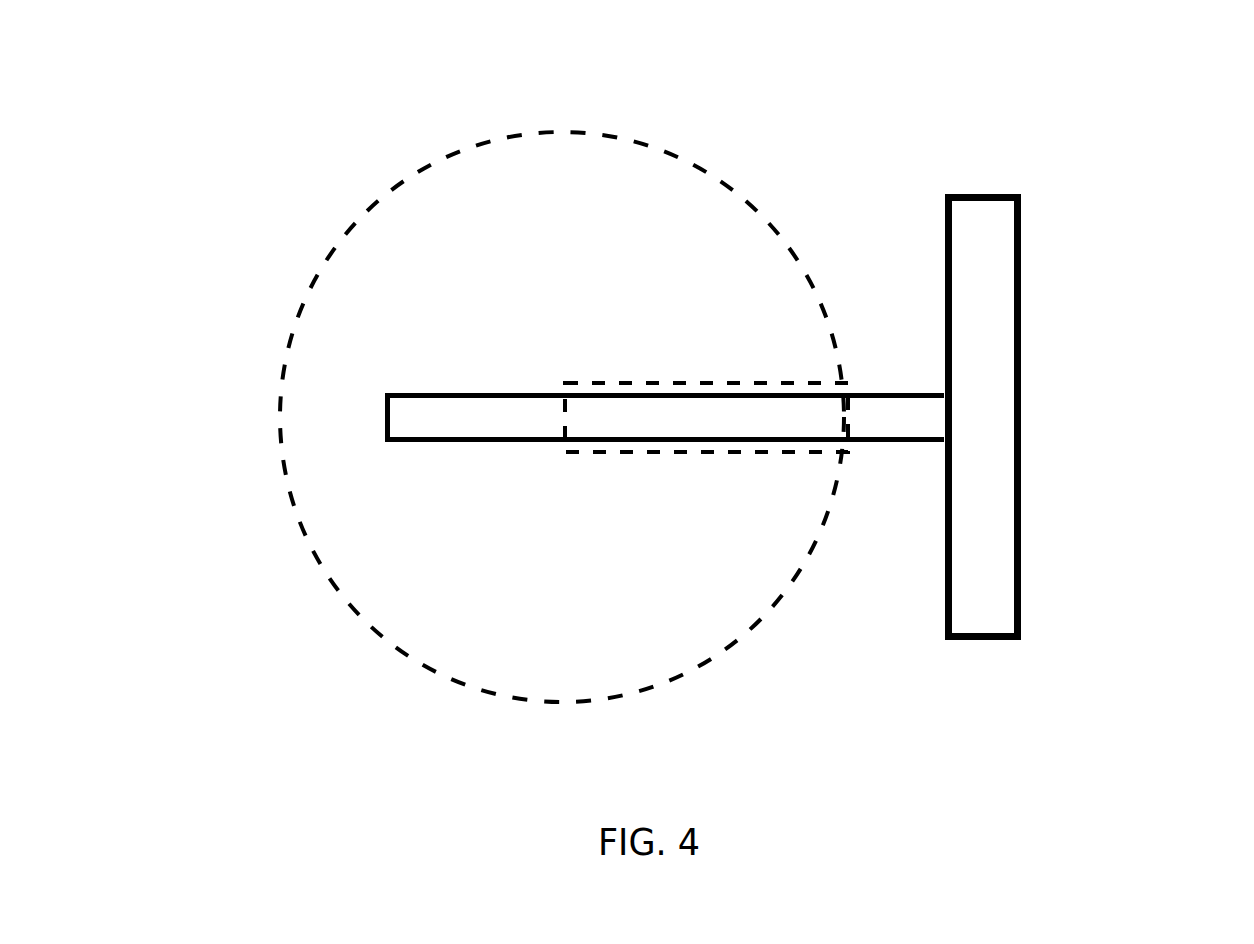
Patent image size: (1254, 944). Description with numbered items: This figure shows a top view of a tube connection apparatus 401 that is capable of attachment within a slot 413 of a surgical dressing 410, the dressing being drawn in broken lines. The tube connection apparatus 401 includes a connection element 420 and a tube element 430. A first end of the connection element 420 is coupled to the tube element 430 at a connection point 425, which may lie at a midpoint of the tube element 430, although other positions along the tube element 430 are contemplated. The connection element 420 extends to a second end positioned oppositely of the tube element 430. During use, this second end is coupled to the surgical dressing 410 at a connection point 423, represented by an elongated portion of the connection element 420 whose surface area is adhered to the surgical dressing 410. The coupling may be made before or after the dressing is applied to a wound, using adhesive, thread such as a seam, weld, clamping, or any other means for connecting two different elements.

The tube connection apparatus 401 is at (455, 122).
The surgical dressing 410 is at (367, 385).
The slot 413 is at (643, 447).
The connection point 423 is at (477, 420).
The connection element 420 is at (875, 428).
The connection point 425 is at (950, 423).
The tube element 430 is at (981, 552).